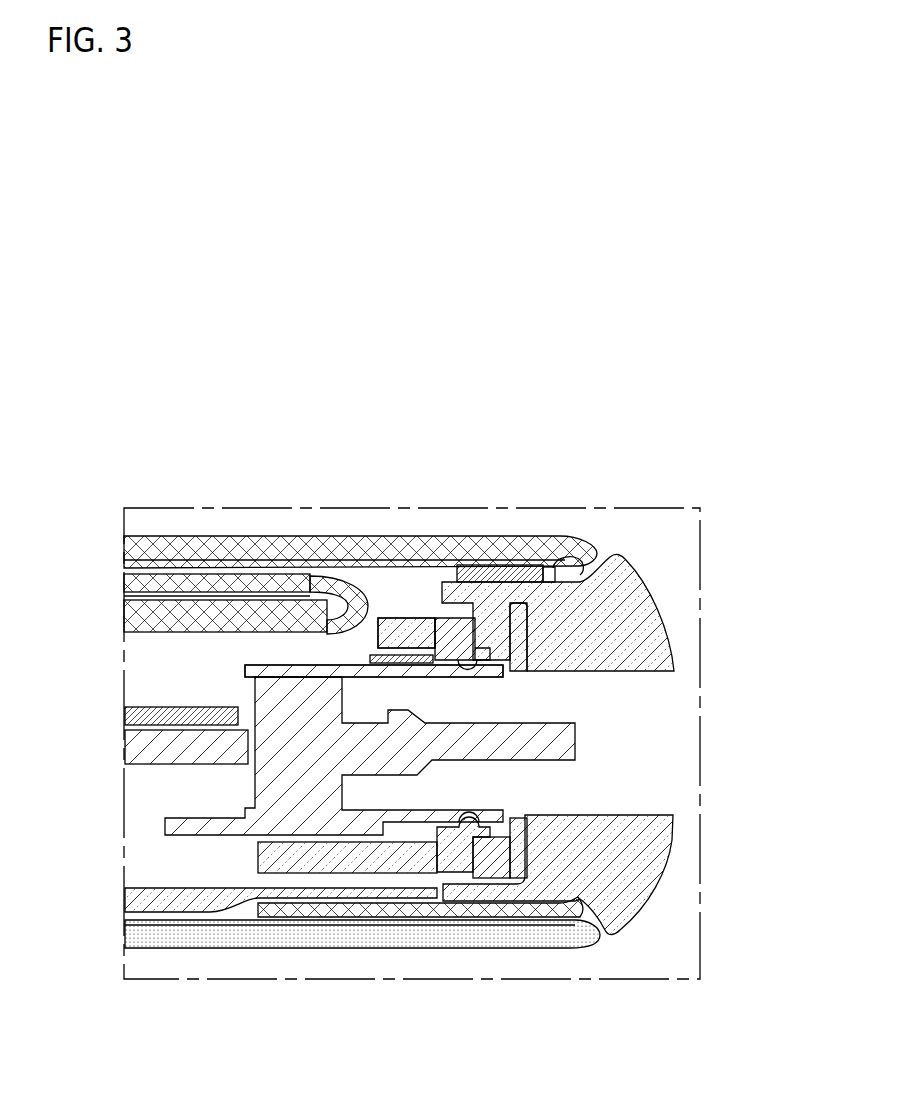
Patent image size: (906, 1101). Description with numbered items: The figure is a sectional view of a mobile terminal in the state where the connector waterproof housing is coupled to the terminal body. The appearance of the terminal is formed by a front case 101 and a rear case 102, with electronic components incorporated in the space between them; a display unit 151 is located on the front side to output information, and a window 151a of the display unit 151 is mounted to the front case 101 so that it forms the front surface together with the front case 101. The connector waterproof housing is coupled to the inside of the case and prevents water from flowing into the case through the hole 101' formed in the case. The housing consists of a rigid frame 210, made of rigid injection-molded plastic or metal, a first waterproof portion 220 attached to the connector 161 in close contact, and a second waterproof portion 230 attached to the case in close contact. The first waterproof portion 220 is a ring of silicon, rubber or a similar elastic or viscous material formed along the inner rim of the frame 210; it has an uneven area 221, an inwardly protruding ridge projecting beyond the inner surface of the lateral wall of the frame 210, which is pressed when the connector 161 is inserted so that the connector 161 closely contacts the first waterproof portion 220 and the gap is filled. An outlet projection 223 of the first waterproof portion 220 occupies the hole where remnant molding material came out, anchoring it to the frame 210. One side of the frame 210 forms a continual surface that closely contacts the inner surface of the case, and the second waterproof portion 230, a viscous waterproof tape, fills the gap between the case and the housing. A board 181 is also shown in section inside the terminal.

The display unit 151 is at (213, 580).
The window 151a is at (413, 548).
The front case 101 is at (611, 612).
The hole 101' is at (612, 862).
The rear case 102 is at (453, 940).
The connector 161 is at (277, 812).
The printed circuit board 181 is at (140, 743).
The frame 210 is at (337, 863).
The first waterproof portion 220 is at (783, 688).
The uneven area 221 is at (480, 675).
The outlet projection 223 is at (465, 639).
The second waterproof portion 230 is at (523, 848).